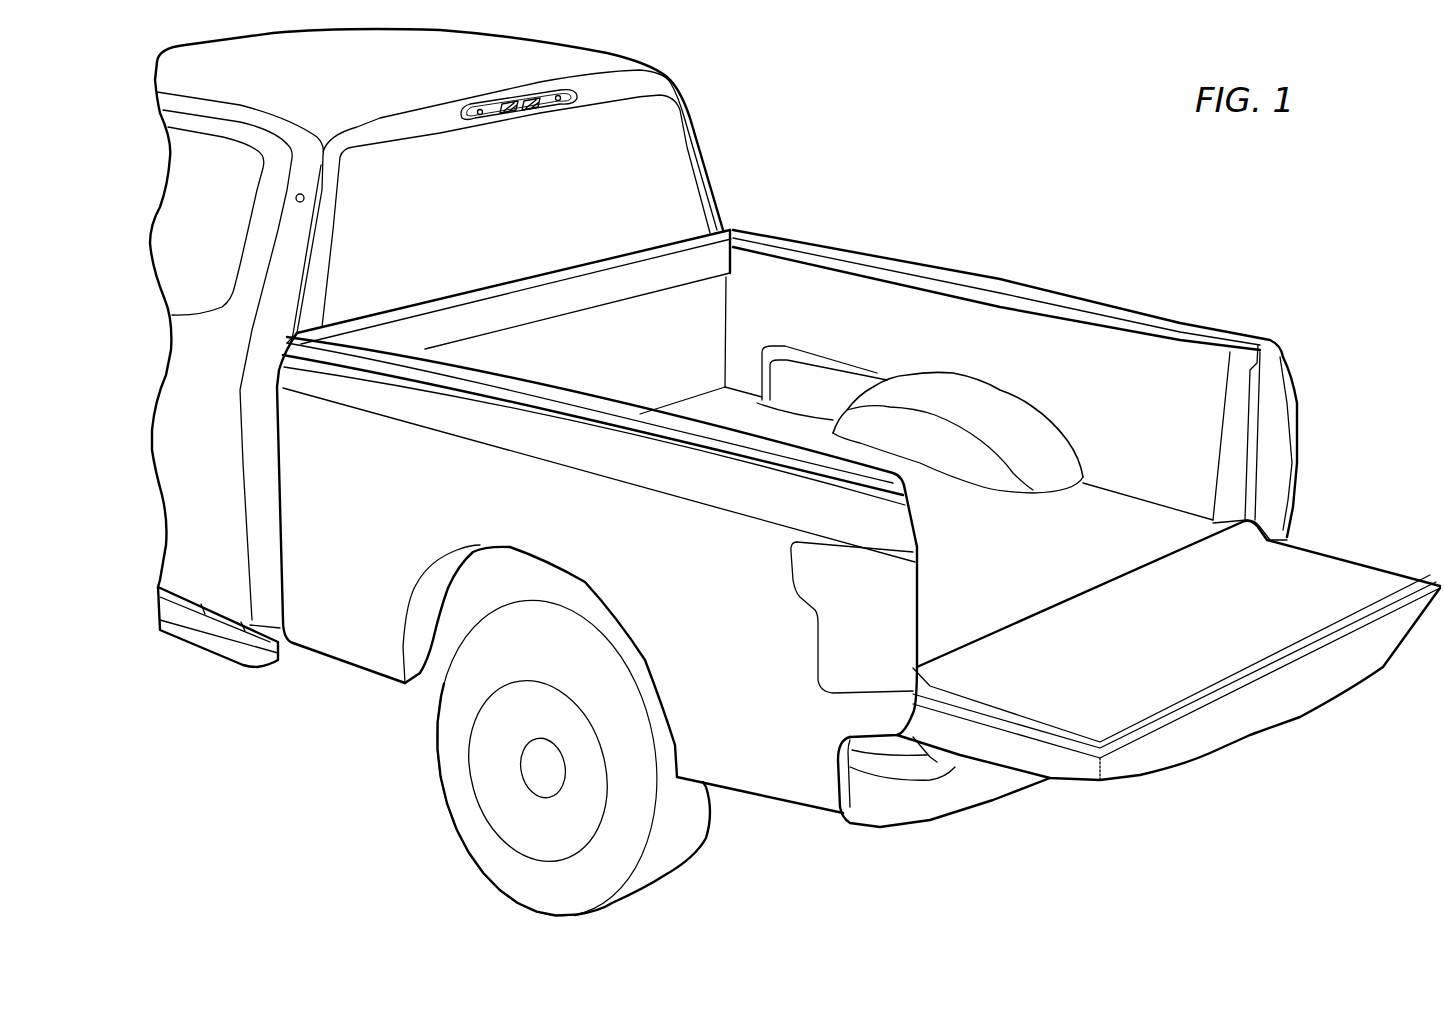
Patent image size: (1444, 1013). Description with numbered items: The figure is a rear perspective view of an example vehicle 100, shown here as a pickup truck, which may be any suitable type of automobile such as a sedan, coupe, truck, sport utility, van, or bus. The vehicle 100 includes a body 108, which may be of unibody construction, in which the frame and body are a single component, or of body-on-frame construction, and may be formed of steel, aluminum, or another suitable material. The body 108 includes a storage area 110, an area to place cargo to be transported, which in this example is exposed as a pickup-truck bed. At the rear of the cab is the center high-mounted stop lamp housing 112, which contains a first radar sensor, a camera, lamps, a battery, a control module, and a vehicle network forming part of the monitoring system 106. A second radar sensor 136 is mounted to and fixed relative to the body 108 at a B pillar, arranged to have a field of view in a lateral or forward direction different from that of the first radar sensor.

The vehicle 100 is at (1000, 63).
The system 106 is at (637, 34).
The body 108 is at (208, 482).
The storage area 110 is at (1103, 533).
The center high-mounted stop lamp (CHMSL) housing 112 is at (547, 107).
The second radar sensor 136 is at (304, 203).